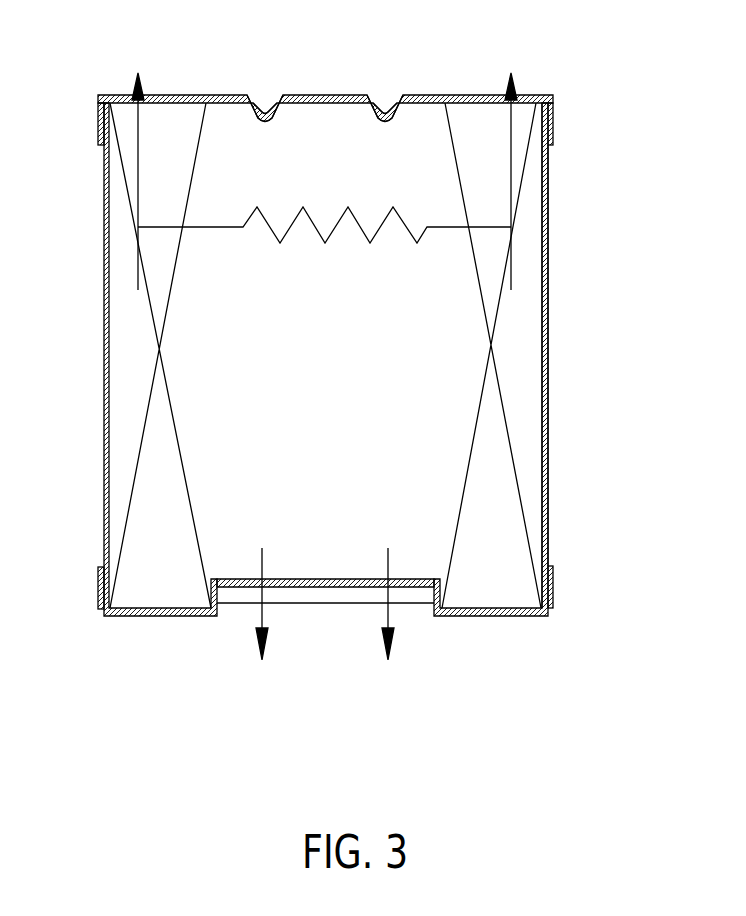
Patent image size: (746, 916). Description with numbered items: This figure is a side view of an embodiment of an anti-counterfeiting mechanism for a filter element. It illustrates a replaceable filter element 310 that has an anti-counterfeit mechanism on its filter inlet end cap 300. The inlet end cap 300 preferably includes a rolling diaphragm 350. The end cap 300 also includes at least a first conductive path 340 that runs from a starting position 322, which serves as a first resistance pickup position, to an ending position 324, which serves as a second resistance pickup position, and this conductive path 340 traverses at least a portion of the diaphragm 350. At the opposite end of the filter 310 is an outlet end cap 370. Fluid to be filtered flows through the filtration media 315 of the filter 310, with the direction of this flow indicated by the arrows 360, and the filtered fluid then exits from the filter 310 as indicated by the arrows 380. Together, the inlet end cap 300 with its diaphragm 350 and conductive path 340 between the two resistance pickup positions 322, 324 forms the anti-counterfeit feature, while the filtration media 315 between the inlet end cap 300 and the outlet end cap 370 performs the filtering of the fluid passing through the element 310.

The filter inlet end cap 300 is at (355, 318).
The replaceable filter element 310 is at (562, 359).
The filtration media 315 is at (543, 525).
The starting position 322 is at (517, 82).
The ending position 324 is at (130, 85).
The first conductive path 340 is at (234, 96).
The rolling diaphragm 350 is at (387, 97).
The arrows 360 is at (160, 341).
The outlet end cap 370 is at (100, 575).
The arrows 380 is at (258, 618).